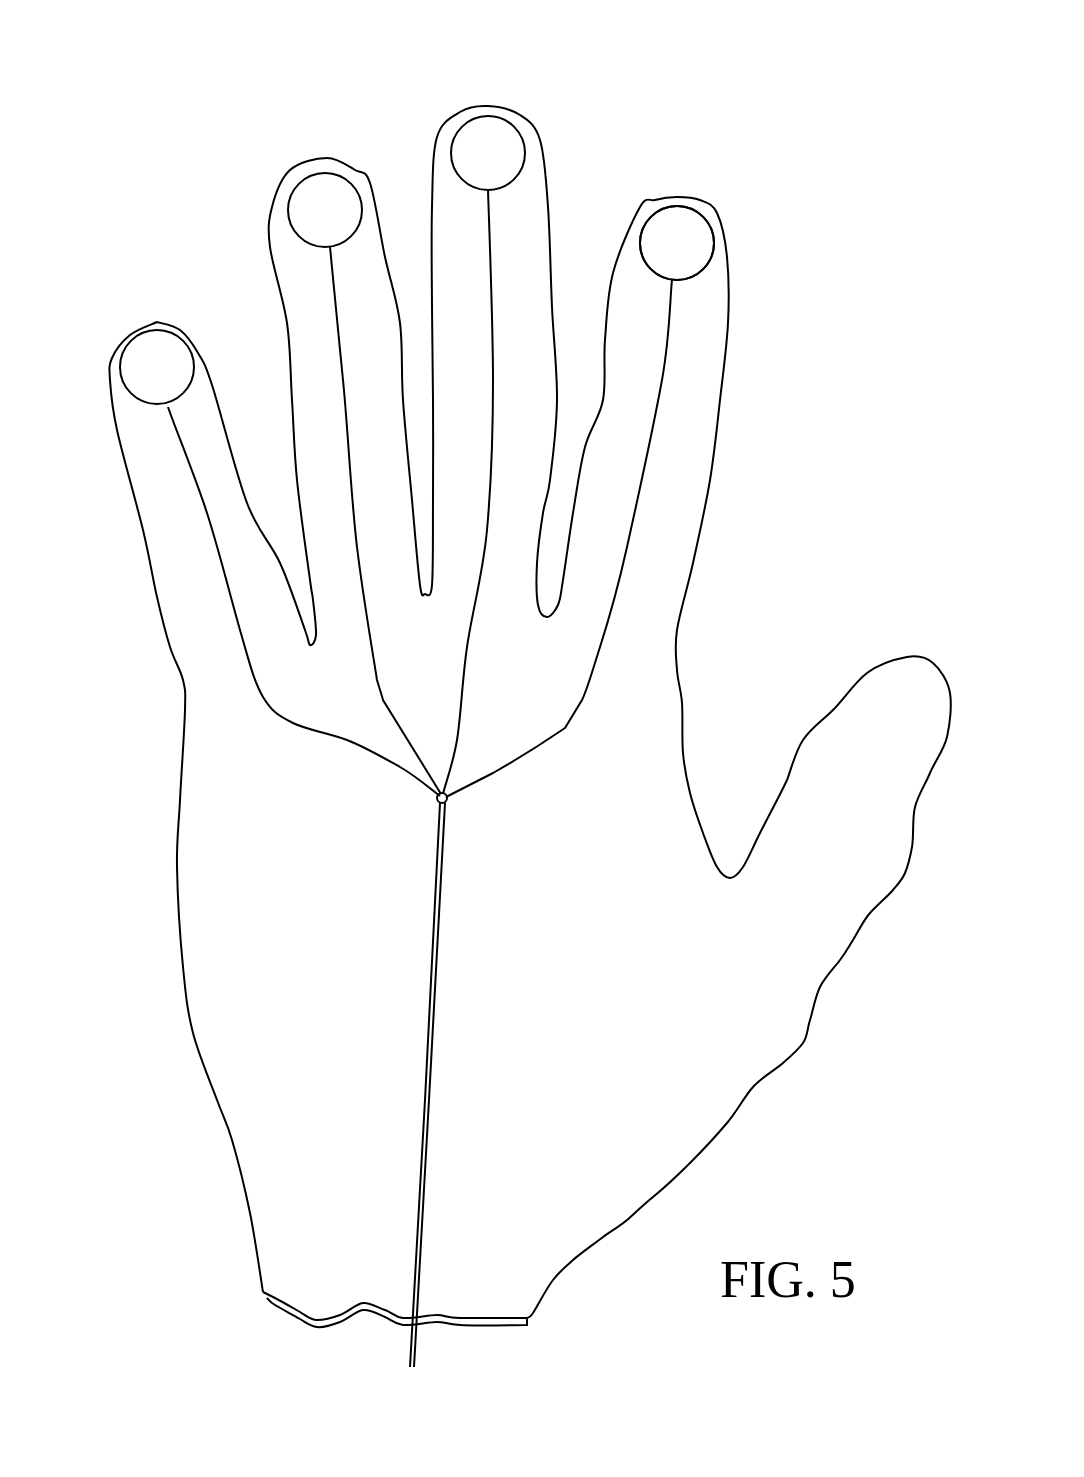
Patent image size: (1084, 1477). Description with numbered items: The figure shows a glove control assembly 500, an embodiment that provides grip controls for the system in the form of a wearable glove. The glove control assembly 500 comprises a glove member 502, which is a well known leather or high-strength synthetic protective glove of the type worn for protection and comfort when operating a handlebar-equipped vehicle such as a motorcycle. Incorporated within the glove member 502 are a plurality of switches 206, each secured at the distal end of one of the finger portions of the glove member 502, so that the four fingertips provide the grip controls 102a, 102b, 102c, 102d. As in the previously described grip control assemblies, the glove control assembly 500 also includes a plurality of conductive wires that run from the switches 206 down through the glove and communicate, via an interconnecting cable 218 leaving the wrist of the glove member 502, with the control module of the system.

The grip control 102a is at (135, 327).
The grip control 102b is at (306, 163).
The grip control 102c is at (476, 102).
The grip control 102d is at (683, 196).
The switch 206 is at (712, 237).
The glove control assembly 500 is at (778, 504).
The glove member 502 is at (232, 1138).
The interconnecting cable 218 is at (417, 1353).